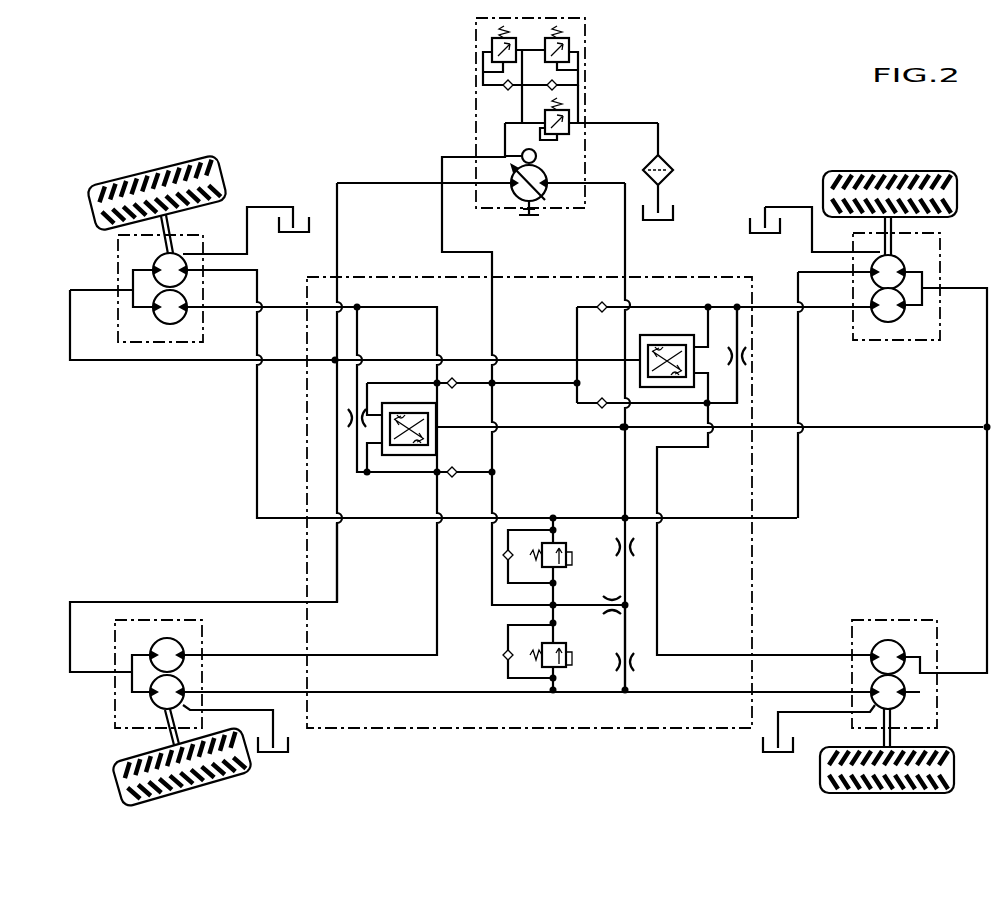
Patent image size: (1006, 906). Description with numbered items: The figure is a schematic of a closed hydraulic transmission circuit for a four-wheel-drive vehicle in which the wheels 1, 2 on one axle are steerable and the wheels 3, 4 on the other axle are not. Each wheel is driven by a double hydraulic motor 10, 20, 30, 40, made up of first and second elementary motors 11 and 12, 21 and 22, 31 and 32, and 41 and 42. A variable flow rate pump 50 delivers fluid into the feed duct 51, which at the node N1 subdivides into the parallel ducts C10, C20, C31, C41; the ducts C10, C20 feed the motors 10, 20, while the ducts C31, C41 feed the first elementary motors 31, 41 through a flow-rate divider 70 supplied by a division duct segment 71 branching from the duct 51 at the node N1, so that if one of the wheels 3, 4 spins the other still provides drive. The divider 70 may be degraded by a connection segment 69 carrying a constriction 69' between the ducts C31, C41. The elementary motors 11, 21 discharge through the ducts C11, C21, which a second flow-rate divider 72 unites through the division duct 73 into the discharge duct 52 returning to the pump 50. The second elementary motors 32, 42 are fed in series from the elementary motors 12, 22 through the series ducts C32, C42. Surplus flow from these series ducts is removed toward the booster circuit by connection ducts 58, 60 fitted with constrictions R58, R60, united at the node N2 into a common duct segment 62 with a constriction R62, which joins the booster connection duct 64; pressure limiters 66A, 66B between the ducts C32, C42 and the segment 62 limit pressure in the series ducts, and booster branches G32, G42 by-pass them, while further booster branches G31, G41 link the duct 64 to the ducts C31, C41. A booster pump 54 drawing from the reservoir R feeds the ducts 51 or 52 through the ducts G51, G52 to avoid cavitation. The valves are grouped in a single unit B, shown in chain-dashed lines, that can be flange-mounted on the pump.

The wheel 1 is at (144, 172).
The wheel 2 is at (200, 782).
The wheel 3 is at (885, 171).
The wheel 4 is at (950, 770).
The hydraulic motor 10 is at (118, 270).
The first elementary motor 11 is at (170, 323).
The second elementary motor 12 is at (170, 262).
The hydraulic motor 20 is at (115, 690).
The first elementary motor 21 is at (167, 639).
The second elementary motor 22 is at (161, 706).
The hydraulic motor 30 is at (941, 249).
The first elementary motor 31 is at (889, 318).
The second elementary motor 32 is at (878, 282).
The hydraulic motor 40 is at (862, 618).
The first elementary motor 41 is at (883, 633).
The second elementary motor 42 is at (895, 702).
The variable flow rate pump 50 is at (537, 203).
The feed duct 51 is at (367, 182).
The discharge duct 52 is at (622, 251).
The booster pump 54 is at (537, 153).
The connection duct 58 is at (627, 577).
The connection duct 60 is at (628, 638).
The common duct segment 62 is at (594, 606).
The booster connection duct 64 is at (495, 404).
The pressure limiter 66A is at (573, 546).
The second pressure limiter 66B is at (567, 646).
The connection segment 69 is at (762, 355).
The constriction 69' is at (759, 363).
The flow-rate divider 70 is at (669, 334).
The division duct segment 71 is at (528, 362).
The flow-rate divider 72 is at (438, 437).
The division duct 73 is at (531, 432).
The valve unit B is at (456, 730).
The reservoir R is at (678, 217).
The parallel duct C10 is at (233, 361).
The duct C11 is at (286, 305).
The parallel duct C20 is at (268, 600).
The duct C21 is at (254, 654).
The parallel duct C31 is at (764, 304).
The series duct C32 is at (528, 517).
The parallel duct C41 is at (784, 652).
The series duct C42 is at (483, 693).
The booster branch G31 is at (575, 338).
The booster branch G32 is at (508, 584).
The booster branch G41 is at (600, 411).
The booster branch G42 is at (508, 628).
The duct G51 is at (477, 104).
The duct G52 is at (583, 106).
The node N1 is at (335, 362).
The node N2 is at (624, 432).
The constriction R58 is at (633, 548).
The constriction R60 is at (633, 660).
The constriction R62 is at (616, 608).